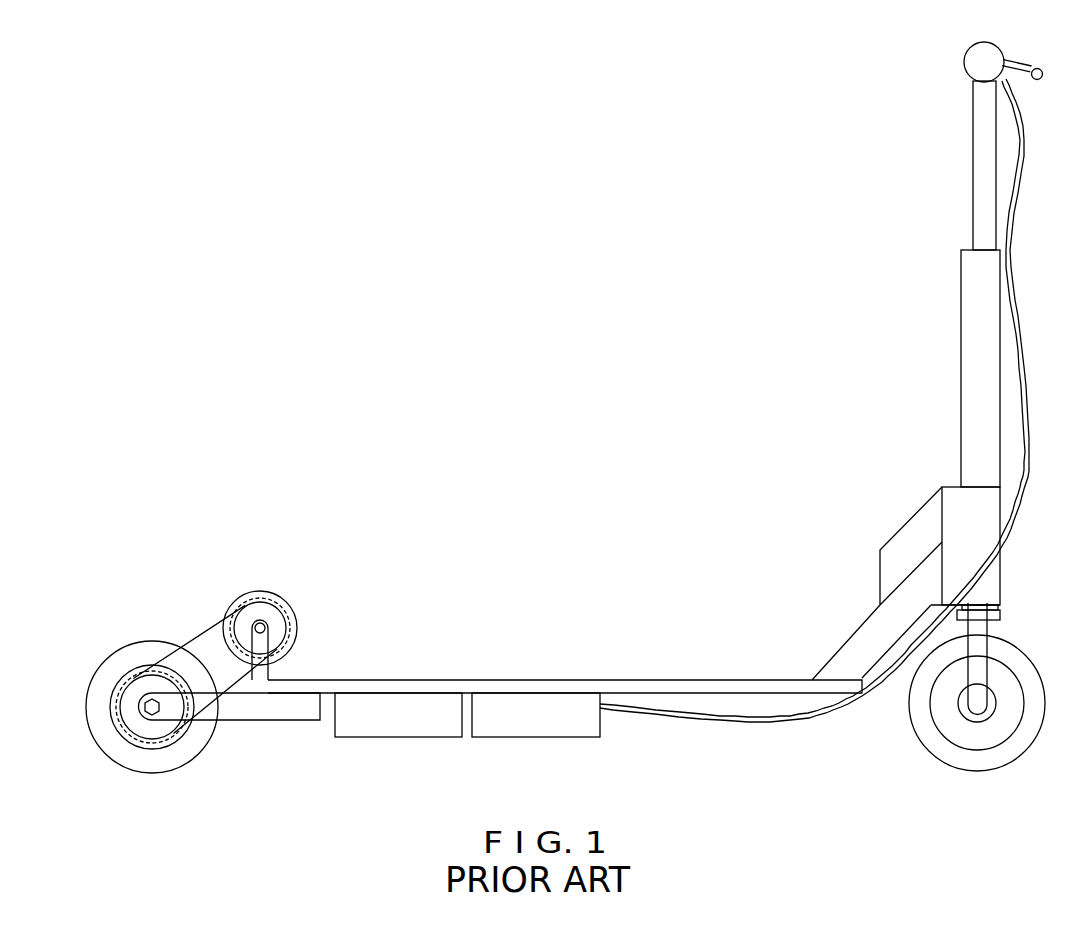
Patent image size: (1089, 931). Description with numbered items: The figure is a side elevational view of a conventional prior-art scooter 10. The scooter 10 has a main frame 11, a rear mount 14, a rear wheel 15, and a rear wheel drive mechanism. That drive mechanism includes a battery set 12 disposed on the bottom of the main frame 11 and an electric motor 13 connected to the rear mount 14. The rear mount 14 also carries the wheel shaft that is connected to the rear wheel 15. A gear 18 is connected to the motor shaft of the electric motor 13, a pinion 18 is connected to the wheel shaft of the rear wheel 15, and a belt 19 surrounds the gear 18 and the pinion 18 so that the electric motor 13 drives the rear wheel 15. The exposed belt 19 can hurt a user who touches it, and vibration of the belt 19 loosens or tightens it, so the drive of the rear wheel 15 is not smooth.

The conventional scooter 10 is at (920, 405).
The main frame 11 is at (630, 688).
The battery set 12 is at (397, 728).
The electric motor 13 is at (263, 592).
The rear mount 14 is at (268, 672).
The rear wheel 15 is at (110, 665).
The gear and pinion 18 is at (145, 680).
The belt 19 is at (200, 632).